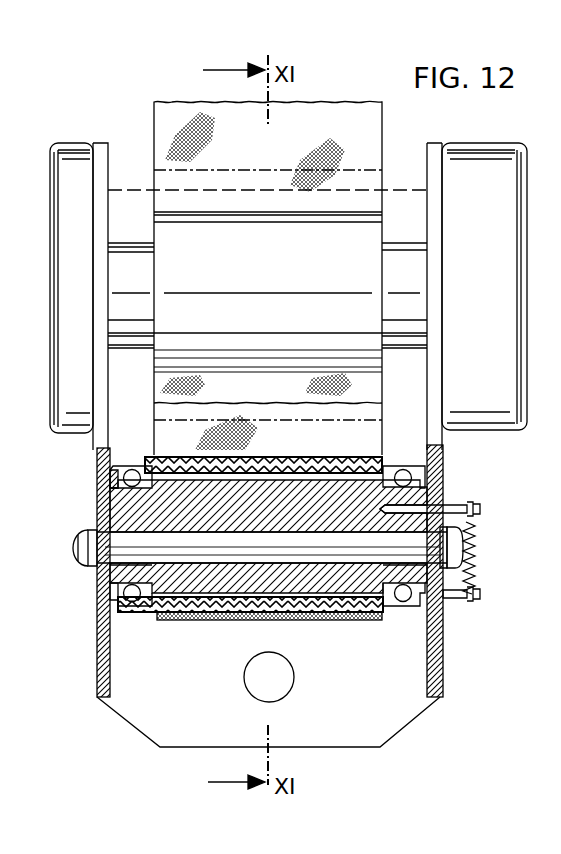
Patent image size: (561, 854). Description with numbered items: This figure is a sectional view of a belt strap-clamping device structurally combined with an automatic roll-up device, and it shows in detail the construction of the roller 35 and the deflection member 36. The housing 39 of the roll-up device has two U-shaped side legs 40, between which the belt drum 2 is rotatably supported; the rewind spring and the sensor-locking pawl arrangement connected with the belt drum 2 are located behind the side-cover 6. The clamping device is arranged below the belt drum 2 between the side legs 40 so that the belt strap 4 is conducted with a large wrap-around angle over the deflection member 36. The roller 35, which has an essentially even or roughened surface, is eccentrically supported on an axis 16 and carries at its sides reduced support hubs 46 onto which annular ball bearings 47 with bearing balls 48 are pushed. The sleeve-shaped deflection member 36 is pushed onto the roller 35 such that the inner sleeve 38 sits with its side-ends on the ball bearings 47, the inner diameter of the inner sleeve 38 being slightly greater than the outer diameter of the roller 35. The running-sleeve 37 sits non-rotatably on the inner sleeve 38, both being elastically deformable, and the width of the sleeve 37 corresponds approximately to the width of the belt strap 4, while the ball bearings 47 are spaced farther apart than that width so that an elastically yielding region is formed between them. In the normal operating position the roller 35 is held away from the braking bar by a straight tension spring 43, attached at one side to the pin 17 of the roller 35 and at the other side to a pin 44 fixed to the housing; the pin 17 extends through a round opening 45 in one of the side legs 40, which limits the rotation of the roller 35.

The belt drum 2 is at (420, 283).
The belt strap 4 is at (375, 131).
The side-cover 6 is at (513, 214).
The axis 16 is at (73, 548).
The pin 17 is at (482, 510).
The roller 35 is at (207, 580).
The deflection member 36 is at (281, 457).
The running-sleeve 37 is at (348, 614).
The inner sleeve 38 is at (322, 602).
The housing 39 is at (315, 595).
The side legs 40 is at (100, 146).
The tension spring 43 is at (475, 548).
The pin 44 is at (475, 600).
The round opening 45 is at (437, 490).
The support hubs 46 is at (110, 573).
The ball bearings 47 is at (113, 479).
The bearing balls 48 is at (131, 470).